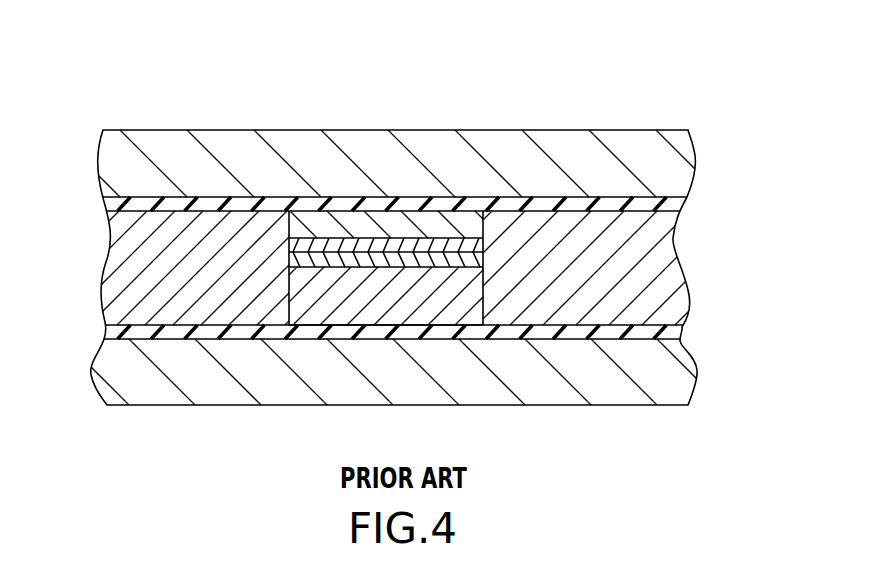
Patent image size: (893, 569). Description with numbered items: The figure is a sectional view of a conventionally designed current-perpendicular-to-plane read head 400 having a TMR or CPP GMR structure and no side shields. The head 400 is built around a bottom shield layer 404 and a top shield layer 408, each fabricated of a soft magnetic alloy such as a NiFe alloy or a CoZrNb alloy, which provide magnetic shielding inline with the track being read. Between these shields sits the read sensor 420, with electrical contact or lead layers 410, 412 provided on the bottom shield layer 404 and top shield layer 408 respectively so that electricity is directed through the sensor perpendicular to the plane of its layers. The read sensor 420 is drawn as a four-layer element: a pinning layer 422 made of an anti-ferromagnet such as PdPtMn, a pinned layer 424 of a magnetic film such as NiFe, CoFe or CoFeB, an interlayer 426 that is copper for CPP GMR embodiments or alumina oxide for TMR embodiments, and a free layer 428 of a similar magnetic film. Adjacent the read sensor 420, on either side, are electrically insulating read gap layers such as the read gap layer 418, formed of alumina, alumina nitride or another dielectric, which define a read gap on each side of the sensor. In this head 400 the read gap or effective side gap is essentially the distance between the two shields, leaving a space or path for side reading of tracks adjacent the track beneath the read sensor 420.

The CPP read head 400 is at (85, 90).
The bottom shield layer 404 is at (393, 372).
The top shield layer 408 is at (388, 163).
The lead layer 410 is at (400, 332).
The lead layer 412 is at (402, 204).
The read gap layer 418 is at (390, 268).
The read sensor 420 is at (333, 337).
The pinning layer 422 is at (428, 313).
The pinned layer 424 is at (437, 260).
The interlayer 426 is at (381, 243).
The free layer 428 is at (342, 222).